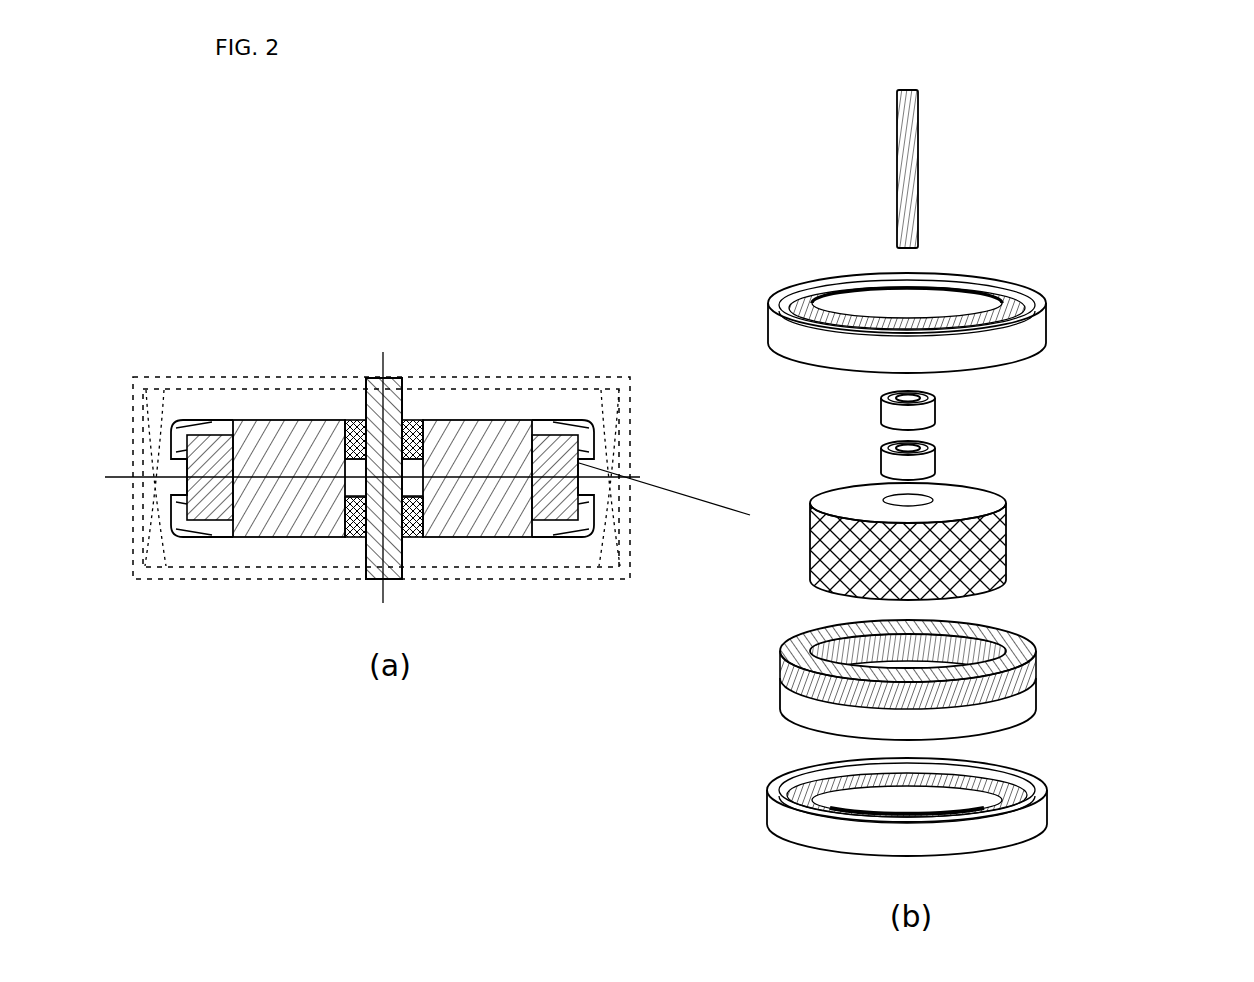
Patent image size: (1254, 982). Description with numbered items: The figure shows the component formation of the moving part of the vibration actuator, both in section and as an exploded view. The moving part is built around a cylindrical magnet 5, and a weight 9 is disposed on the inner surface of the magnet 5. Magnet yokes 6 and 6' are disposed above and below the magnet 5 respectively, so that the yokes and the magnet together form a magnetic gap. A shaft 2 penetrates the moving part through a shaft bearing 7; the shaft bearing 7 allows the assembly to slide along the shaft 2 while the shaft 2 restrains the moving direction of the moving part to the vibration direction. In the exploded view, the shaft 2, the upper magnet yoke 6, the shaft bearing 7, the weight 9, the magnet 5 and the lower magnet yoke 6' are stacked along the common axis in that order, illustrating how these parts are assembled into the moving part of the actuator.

The shaft 2 is at (908, 138).
The magnet yoke 6 is at (998, 296).
The shaft bearing 7 is at (925, 463).
The weight 9 is at (933, 563).
The cylindrical magnet 5 is at (1000, 703).
The magnet yoke 6' is at (998, 807).